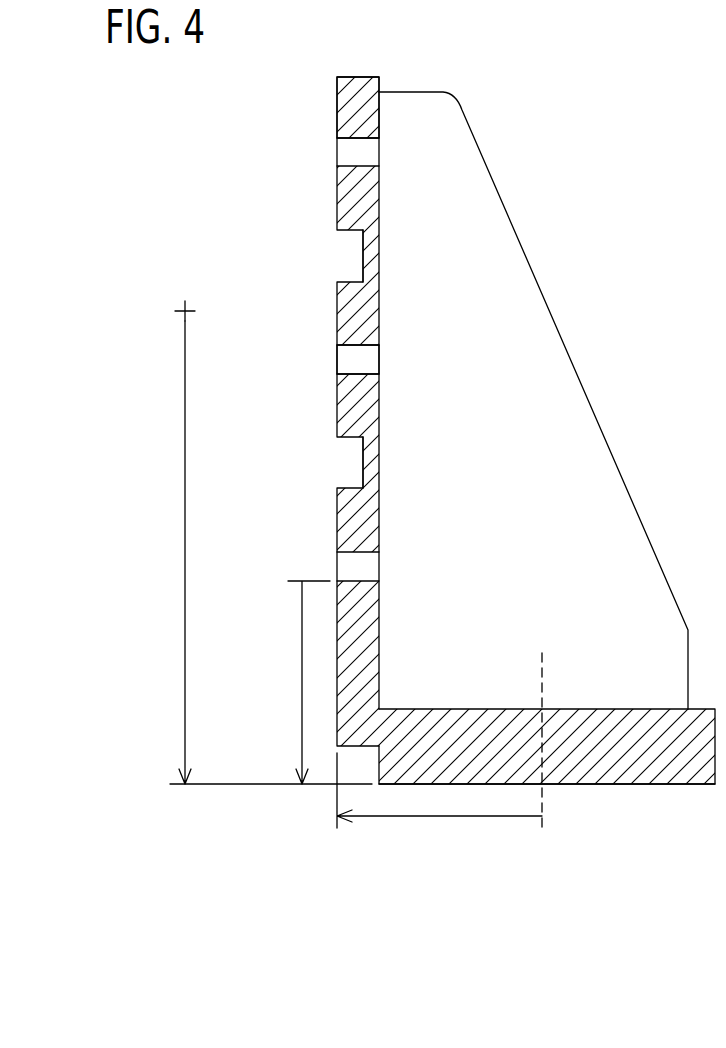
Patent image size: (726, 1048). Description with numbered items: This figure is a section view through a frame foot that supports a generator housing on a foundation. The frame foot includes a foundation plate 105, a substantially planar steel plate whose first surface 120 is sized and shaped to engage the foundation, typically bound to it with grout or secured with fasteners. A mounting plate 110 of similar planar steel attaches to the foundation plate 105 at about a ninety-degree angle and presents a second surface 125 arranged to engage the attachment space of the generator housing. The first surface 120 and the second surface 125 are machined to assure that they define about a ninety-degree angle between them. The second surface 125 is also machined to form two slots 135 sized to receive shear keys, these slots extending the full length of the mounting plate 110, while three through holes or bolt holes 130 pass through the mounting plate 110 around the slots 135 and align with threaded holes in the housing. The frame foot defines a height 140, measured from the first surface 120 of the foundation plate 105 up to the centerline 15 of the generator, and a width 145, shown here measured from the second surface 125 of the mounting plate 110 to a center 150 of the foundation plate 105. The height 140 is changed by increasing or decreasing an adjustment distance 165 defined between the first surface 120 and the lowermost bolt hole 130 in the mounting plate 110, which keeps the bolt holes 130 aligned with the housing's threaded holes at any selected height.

The centerline 15 is at (183, 305).
The foundation plate 105 is at (627, 738).
The mounting plate 110 is at (363, 86).
The first surface 120 is at (611, 784).
The second surface 125 is at (337, 101).
The holes 130 is at (364, 347).
The slots 135 is at (362, 253).
The height 140 is at (183, 553).
The width 145 is at (440, 817).
The center 150 is at (540, 677).
The adjustment distance 165 is at (300, 680).